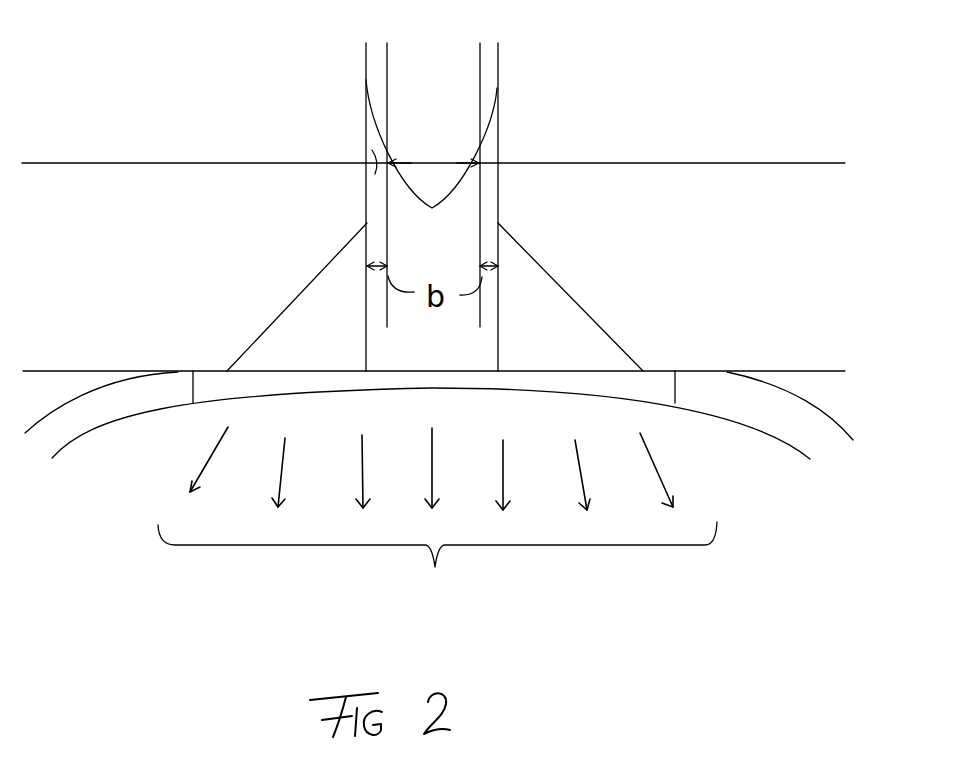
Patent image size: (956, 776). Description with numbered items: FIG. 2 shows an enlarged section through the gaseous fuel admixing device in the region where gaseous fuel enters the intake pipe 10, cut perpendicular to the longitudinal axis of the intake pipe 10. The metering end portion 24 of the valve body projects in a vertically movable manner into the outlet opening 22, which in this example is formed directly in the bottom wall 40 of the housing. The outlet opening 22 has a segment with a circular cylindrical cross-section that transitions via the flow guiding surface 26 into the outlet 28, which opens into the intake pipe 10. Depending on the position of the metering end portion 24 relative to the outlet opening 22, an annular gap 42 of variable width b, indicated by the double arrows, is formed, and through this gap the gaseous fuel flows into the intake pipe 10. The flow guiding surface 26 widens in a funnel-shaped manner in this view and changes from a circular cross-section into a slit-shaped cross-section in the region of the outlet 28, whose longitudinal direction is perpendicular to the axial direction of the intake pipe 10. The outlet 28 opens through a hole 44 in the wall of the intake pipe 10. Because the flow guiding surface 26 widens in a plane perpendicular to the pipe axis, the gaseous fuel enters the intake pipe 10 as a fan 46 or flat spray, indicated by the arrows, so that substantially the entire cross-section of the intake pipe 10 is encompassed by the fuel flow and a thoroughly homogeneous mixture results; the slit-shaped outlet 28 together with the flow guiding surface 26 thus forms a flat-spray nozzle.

The intake pipe 10 is at (439, 415).
The outlet opening 22 is at (497, 177).
The metering end portion 24 is at (453, 113).
The flow guiding surface 26 is at (568, 298).
The outlet 28 is at (243, 371).
The bottom wall 40 is at (648, 188).
The annular gap 42 is at (375, 160).
The hole 44 is at (673, 393).
The fan 46 is at (437, 521).